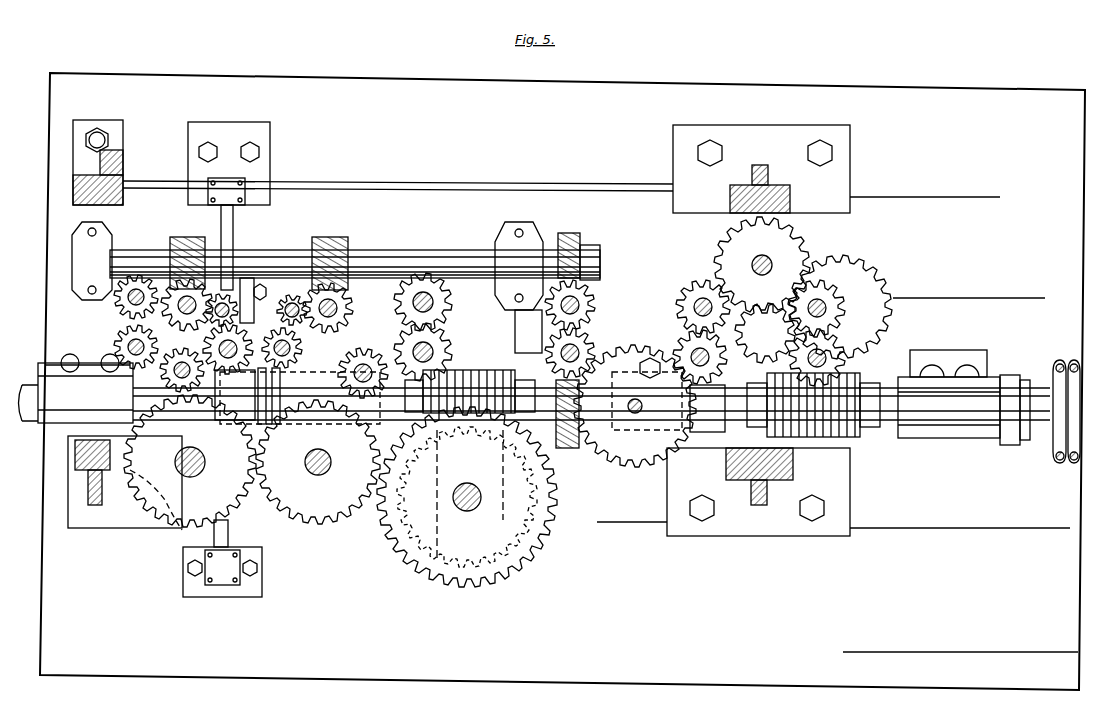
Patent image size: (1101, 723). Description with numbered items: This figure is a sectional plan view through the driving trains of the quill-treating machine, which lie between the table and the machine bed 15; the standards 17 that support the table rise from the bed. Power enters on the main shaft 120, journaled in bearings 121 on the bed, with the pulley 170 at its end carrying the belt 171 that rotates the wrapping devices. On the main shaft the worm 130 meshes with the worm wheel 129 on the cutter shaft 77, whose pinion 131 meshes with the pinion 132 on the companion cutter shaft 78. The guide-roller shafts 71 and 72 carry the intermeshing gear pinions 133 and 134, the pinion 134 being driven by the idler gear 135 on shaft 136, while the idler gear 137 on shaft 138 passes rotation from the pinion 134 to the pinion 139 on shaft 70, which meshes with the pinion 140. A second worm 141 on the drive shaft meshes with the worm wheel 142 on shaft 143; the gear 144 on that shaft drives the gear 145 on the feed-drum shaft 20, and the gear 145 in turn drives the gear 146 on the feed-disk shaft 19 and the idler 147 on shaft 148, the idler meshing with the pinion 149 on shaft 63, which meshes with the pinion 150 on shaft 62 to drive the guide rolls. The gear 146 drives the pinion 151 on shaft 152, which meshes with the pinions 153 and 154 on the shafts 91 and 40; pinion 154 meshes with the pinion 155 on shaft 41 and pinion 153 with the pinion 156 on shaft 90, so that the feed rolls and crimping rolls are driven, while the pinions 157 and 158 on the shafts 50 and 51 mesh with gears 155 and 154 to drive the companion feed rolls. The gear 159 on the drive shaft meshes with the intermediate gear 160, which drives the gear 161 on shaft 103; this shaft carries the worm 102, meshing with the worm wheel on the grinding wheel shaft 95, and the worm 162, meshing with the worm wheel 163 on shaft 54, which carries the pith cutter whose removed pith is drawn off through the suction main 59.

The machine bed 15 is at (1010, 92).
The standards 17 is at (123, 184).
The vertical shaft 19 is at (197, 472).
The vertical shaft 20 is at (314, 478).
The vertical shaft 40 is at (229, 372).
The vertical shaft 41 is at (285, 358).
The shaft 50 is at (248, 265).
The shaft 51 is at (305, 268).
The shaft 54 is at (364, 303).
The suction main 59 is at (614, 297).
The shaft 62 is at (452, 302).
The shaft 63 is at (446, 352).
The shaft 70 is at (604, 361).
The shaft 71 is at (700, 298).
The shaft 72 is at (726, 358).
The shaft 77 is at (818, 300).
The shaft 78 is at (812, 354).
The shaft 90 is at (133, 303).
The shaft 91 is at (130, 356).
The grinding wheel shaft 95 is at (185, 302).
The worm 102 is at (186, 240).
The shaft 103 is at (412, 262).
The main shaft 120 is at (28, 382).
The bearings 121 is at (40, 418).
The worm wheel 129 is at (884, 292).
The worm 130 is at (858, 436).
The pinion 131 is at (850, 306).
The pinion 132 is at (856, 344).
The gear pinion 133 is at (721, 323).
The gear pinion 134 is at (690, 350).
The idler gear 135 is at (738, 250).
The shaft 136 is at (768, 262).
The idler gear 137 is at (616, 472).
The shaft 138 is at (643, 408).
The pinion 139 is at (588, 352).
The pinion 140 is at (596, 300).
The worm 141 is at (480, 373).
The worm wheel 142 is at (480, 582).
The shaft 143 is at (468, 512).
The gear 144 is at (524, 560).
The gear 145 is at (345, 545).
The gear 146 is at (170, 512).
The idler 147 is at (385, 329).
The shaft 148 is at (358, 366).
The pinion 149 is at (436, 345).
The pinion 150 is at (432, 288).
The pinion 151 is at (240, 403).
The shaft 152 is at (178, 378).
The pinion 153 is at (118, 344).
The pinion 154 is at (282, 305).
The pinion 155 is at (356, 329).
The pinion 156 is at (118, 295).
The pinion 157 is at (290, 300).
The pinion 158 is at (226, 298).
The gear 159 is at (574, 450).
The intermediate gear 160 is at (590, 342).
The gear 161 is at (571, 236).
The worm 162 is at (338, 255).
The worm wheel 163 is at (346, 300).
The pulley 170 is at (1052, 372).
The belt 171 is at (1072, 360).